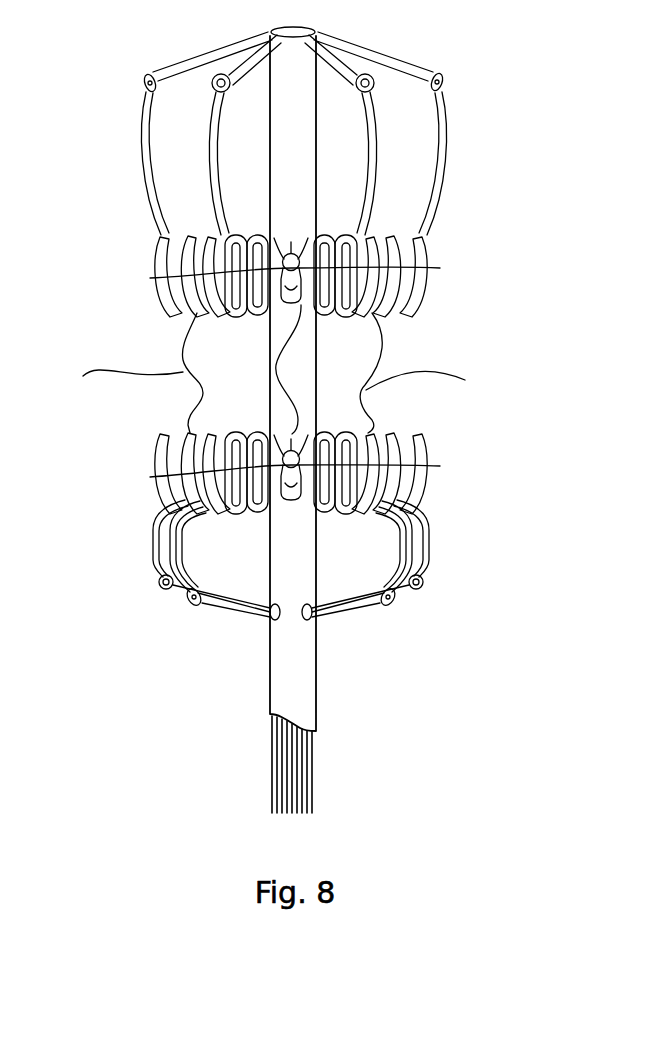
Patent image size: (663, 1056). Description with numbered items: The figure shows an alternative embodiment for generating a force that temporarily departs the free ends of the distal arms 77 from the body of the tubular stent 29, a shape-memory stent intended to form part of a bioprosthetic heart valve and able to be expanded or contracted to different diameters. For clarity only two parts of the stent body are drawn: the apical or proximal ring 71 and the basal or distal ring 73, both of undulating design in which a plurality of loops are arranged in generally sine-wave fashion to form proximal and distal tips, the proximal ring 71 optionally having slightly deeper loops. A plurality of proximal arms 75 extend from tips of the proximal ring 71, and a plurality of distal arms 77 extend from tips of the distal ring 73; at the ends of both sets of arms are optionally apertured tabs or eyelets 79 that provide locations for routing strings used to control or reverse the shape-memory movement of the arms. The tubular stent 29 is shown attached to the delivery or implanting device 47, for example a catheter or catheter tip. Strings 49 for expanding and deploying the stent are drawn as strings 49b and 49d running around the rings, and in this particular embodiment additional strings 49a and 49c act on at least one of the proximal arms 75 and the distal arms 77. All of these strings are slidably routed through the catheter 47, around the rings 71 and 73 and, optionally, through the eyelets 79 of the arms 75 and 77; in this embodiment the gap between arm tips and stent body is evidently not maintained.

The tubular stent 29 is at (368, 390).
The delivery or implanting device 47 is at (268, 677).
The strings 49 is at (270, 747).
The strings 49a is at (232, 46).
The strings 49b is at (177, 473).
The strings 49c is at (343, 603).
The strings 49d is at (425, 278).
The proximal ring 71 is at (139, 267).
The distal ring 73 is at (142, 463).
The proximal arms 75 is at (140, 115).
The distal arms 77 is at (147, 550).
The eyelets 79 is at (443, 80).